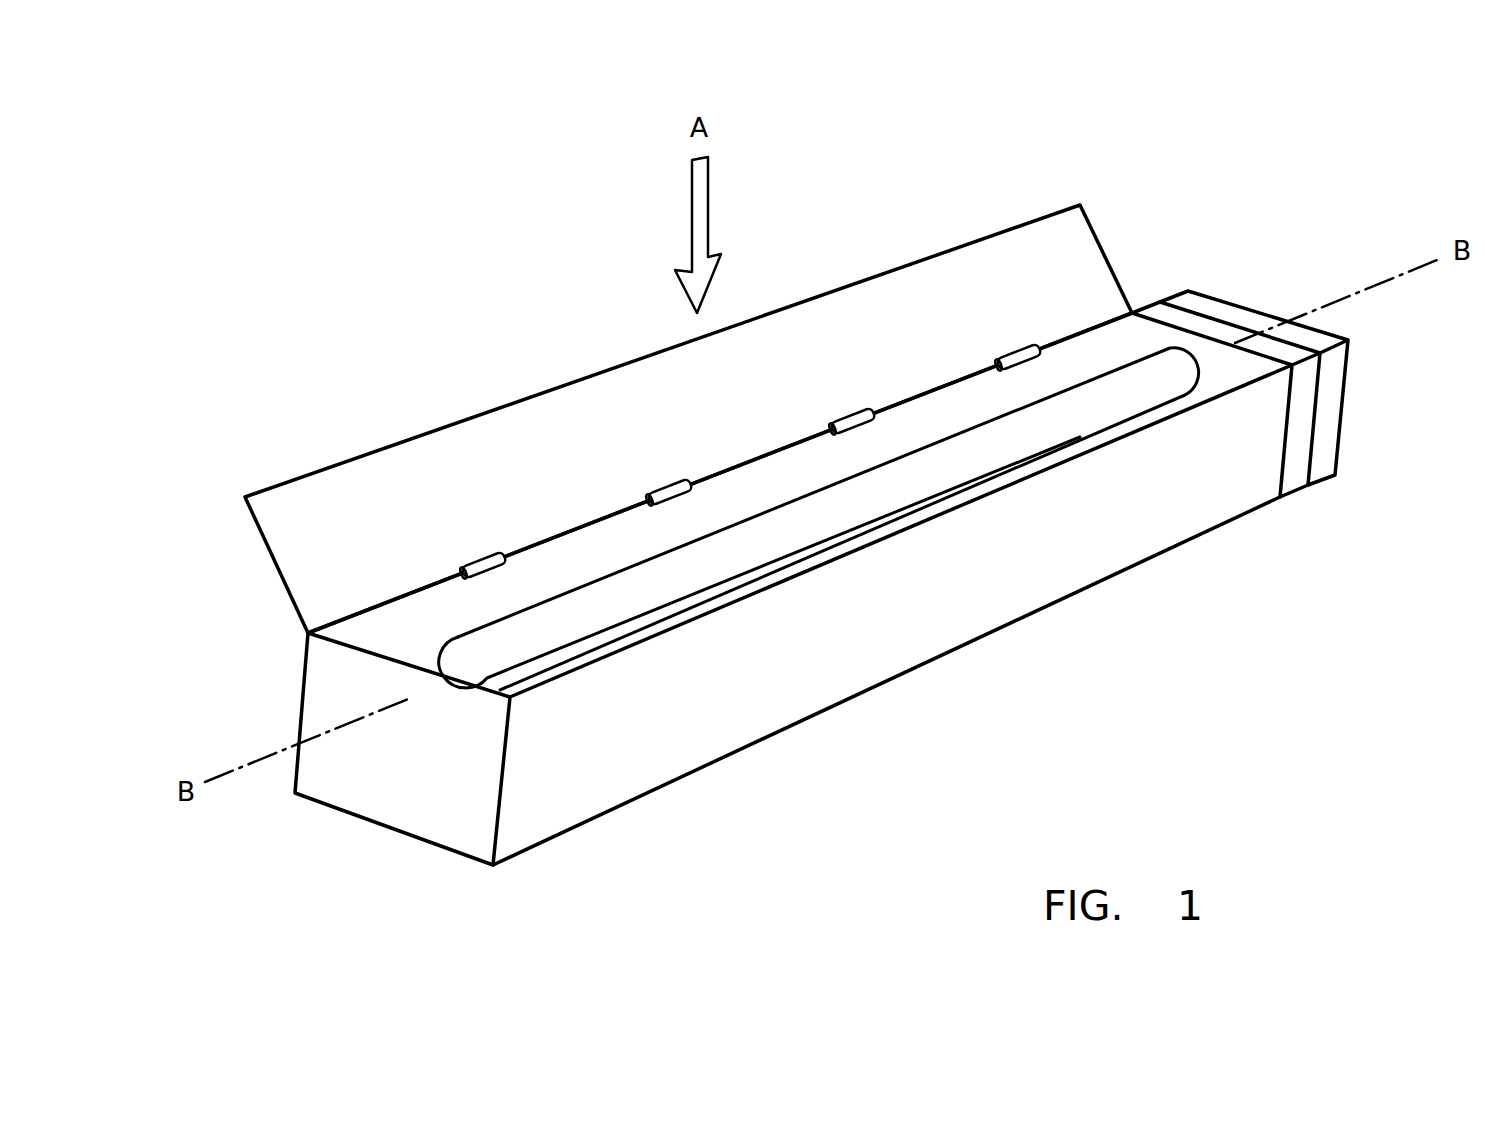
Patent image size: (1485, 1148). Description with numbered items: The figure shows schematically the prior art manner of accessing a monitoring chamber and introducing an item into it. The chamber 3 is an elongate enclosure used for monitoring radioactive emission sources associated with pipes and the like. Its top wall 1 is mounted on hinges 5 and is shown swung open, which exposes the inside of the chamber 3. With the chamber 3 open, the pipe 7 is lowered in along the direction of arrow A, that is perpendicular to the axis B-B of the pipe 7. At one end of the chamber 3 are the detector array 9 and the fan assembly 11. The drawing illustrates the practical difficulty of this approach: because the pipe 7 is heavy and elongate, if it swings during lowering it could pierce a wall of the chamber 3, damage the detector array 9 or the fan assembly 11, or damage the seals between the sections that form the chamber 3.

The top wall 1 is at (688, 352).
The chamber 3 is at (697, 606).
The hinges 5 is at (693, 470).
The pipe 7 is at (759, 456).
The detector array 9 is at (1226, 321).
The fan assembly 11 is at (1254, 316).